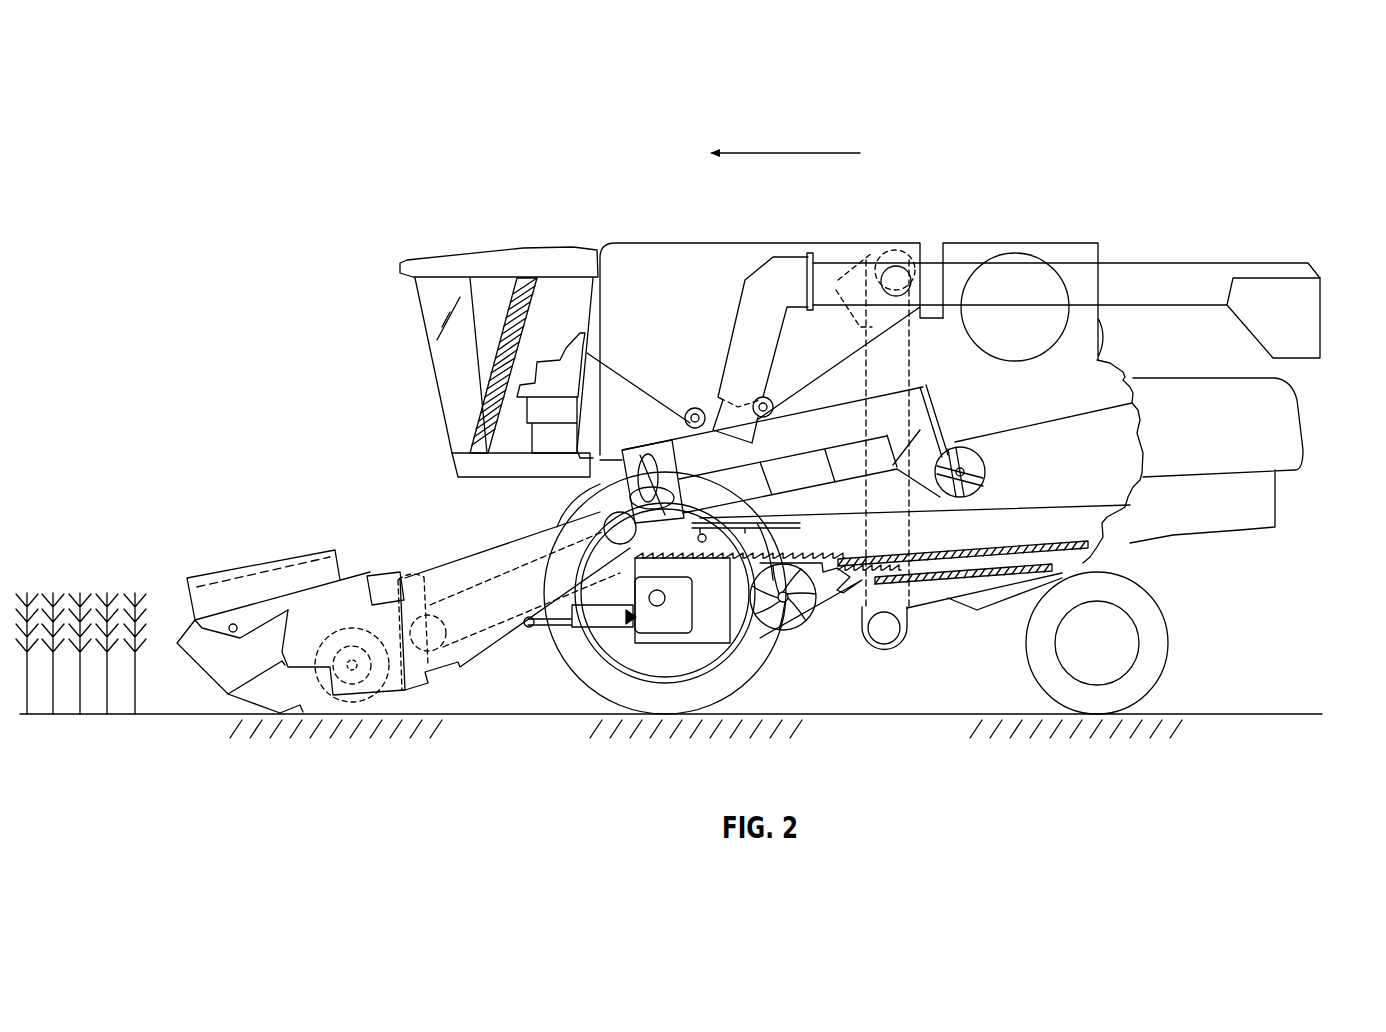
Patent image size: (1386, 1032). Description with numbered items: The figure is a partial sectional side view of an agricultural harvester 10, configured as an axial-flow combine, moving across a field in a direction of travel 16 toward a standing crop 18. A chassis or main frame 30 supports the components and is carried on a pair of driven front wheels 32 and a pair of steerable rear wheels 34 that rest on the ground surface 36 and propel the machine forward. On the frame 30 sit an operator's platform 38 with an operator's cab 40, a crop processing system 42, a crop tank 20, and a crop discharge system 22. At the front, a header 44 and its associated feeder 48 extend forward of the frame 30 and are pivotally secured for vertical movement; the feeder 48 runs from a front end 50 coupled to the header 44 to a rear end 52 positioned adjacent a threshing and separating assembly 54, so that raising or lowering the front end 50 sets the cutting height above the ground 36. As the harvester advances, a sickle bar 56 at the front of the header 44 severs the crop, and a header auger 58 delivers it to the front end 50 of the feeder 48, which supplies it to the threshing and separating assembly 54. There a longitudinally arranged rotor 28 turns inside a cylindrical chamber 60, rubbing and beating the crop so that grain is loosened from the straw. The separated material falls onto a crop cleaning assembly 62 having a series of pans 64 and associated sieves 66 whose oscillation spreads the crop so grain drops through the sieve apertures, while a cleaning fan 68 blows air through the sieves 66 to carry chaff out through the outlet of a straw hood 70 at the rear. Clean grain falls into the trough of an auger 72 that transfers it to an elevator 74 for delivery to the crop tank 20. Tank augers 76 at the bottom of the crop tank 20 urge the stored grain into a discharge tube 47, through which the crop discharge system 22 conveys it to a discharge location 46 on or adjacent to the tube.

The agricultural harvester 10 is at (458, 210).
The direction of travel 16 is at (808, 153).
The standing crop 18 is at (97, 588).
The crop tank 20 is at (690, 243).
The crop discharge system 22 is at (1121, 226).
The rotor 28 is at (652, 448).
The frame 30 is at (1107, 553).
The front wheels 32 is at (598, 680).
The rear wheels 34 is at (1163, 653).
The ground surface 36 is at (1192, 713).
The operator's platform 38 is at (460, 470).
The operator's cab 40 is at (445, 358).
The crop processing system 42 is at (1013, 495).
The header 44 is at (234, 554).
The discharge location 46 is at (1333, 298).
The discharge tube 47 is at (1157, 277).
The feeder 48 is at (436, 548).
The front end 50 is at (373, 613).
The rear end 52 is at (605, 500).
The threshing and separating assembly 54 is at (678, 470).
The sickle bar 56 is at (235, 698).
The header auger 58 is at (363, 698).
The cylindrical chamber 60 is at (828, 418).
The crop cleaning assembly 62 is at (849, 642).
The pans 64 is at (795, 560).
The sieves 66 is at (925, 552).
The cleaning fan 68 is at (783, 632).
The straw hood 70 is at (1295, 442).
The auger 72 is at (888, 635).
The elevator 74 is at (915, 345).
The tank augers 76 is at (698, 405).